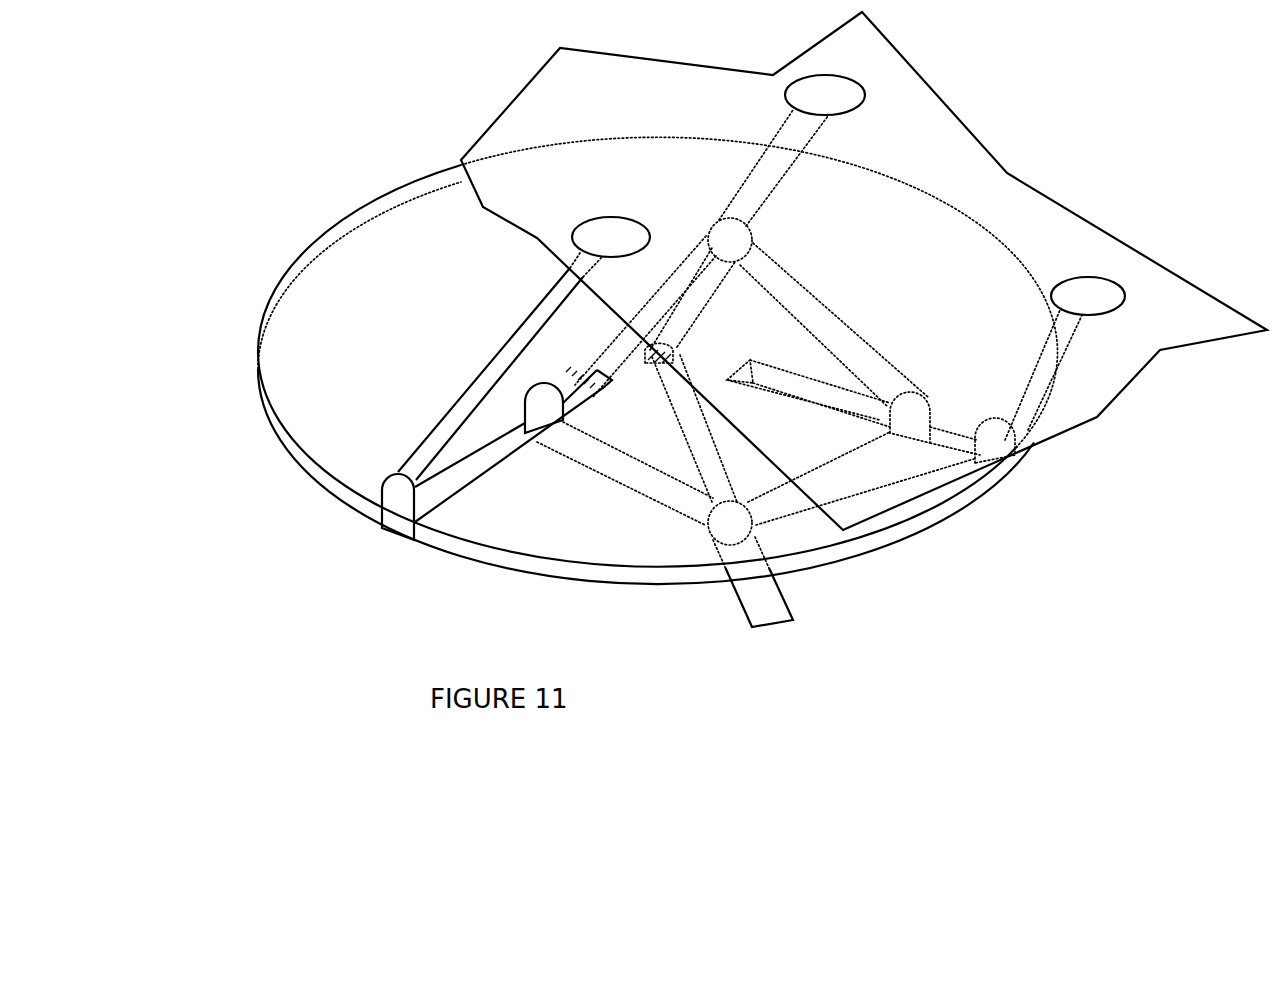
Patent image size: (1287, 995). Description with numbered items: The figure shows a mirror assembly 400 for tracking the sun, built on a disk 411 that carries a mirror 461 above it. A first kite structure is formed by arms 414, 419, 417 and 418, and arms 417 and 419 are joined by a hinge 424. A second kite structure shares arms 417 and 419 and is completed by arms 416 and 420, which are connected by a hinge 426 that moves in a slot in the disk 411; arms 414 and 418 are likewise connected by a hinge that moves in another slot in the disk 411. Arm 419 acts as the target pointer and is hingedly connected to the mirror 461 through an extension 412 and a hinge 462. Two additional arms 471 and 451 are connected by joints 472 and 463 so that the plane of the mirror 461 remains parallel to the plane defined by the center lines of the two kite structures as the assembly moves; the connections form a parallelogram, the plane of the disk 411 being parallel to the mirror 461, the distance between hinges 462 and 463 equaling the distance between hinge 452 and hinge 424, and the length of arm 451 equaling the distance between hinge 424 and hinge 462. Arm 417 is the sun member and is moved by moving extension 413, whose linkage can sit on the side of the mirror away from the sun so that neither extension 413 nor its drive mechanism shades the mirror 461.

The mirror assembly 400 is at (176, 141).
The disk 411 is at (283, 293).
The extension 412 is at (767, 177).
The extension 413 is at (778, 603).
The arm 414 is at (837, 318).
The arm 416 is at (605, 463).
The arm 417 is at (687, 413).
The arm 418 is at (823, 483).
The arm 419 is at (689, 322).
The arm 420 is at (580, 360).
The hinge 424 is at (660, 350).
The hinge 426 is at (537, 412).
The arm 451 is at (1030, 393).
The hinge 452 is at (1003, 443).
The mirror 461 is at (902, 62).
The hinge 462 is at (845, 97).
The joint 463 is at (1094, 287).
The arm 471 is at (467, 418).
The joint 472 is at (612, 218).